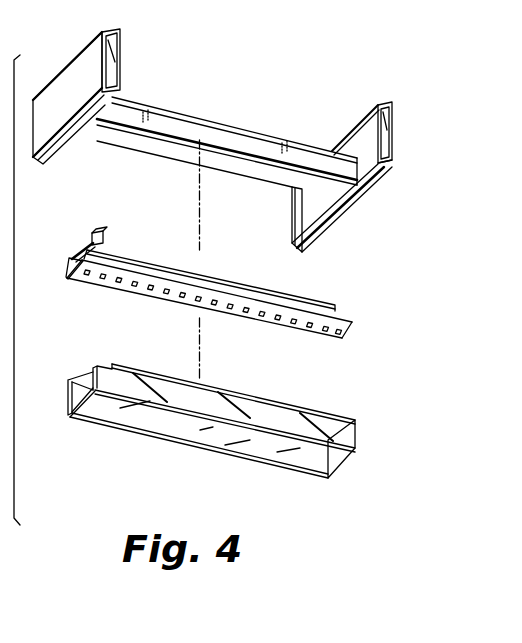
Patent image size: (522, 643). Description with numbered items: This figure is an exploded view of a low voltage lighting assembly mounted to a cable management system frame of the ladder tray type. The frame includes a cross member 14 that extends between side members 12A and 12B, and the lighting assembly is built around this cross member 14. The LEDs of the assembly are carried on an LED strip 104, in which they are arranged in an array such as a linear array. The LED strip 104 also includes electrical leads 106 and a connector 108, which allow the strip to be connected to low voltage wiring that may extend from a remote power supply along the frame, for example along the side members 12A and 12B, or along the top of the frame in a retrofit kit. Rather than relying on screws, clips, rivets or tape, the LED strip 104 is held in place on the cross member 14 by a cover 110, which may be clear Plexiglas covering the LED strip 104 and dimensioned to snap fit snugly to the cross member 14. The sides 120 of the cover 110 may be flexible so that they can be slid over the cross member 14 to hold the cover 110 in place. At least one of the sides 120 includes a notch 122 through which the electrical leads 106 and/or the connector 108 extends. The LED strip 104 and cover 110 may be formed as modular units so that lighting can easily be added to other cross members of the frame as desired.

The cross member 14 is at (193, 130).
The side member 12A is at (358, 128).
The side member 12B is at (76, 78).
The LED strip 104 is at (263, 321).
The electrical leads 106 is at (75, 257).
The connector 108 is at (99, 231).
The cover 110 is at (188, 397).
The sides 120 is at (66, 394).
The notch 122 is at (102, 373).